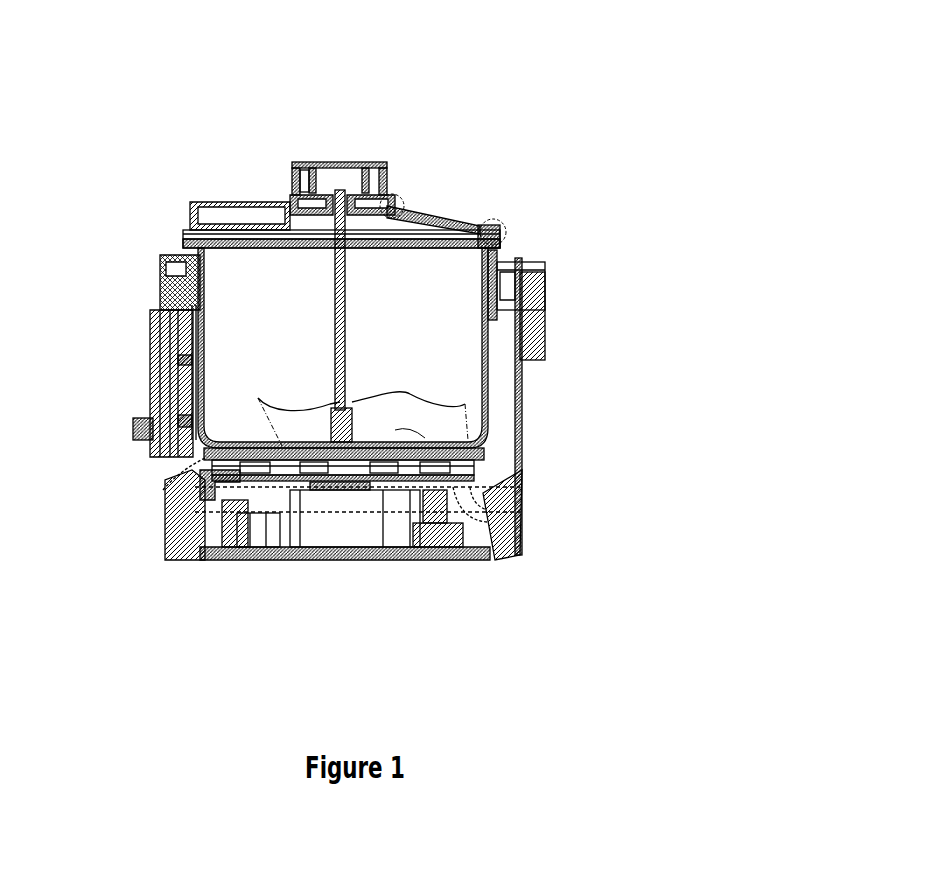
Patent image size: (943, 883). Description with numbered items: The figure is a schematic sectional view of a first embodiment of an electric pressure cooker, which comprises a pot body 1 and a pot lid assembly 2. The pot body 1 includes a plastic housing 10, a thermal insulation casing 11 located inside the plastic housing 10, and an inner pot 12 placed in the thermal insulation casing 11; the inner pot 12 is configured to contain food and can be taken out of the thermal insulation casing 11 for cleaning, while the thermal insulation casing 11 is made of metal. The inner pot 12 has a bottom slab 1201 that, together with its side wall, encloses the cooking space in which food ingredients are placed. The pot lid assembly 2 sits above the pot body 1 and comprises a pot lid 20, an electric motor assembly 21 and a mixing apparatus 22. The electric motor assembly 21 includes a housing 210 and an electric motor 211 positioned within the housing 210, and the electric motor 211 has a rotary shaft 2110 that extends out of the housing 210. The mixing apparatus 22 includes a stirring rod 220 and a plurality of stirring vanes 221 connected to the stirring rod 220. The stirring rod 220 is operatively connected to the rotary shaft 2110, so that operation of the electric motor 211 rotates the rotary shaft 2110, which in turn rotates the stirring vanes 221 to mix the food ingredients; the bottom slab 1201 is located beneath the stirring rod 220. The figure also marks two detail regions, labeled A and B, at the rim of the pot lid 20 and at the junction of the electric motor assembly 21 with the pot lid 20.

The pot body 1 is at (176, 440).
The plastic housing 10 is at (520, 417).
The thermal insulation casing 11 is at (215, 484).
The inner pot 12 is at (148, 393).
The bottom slab 1201 is at (232, 547).
The pot lid assembly 2 is at (334, 223).
The pot lid 20 is at (409, 319).
The electric motor assembly 21 is at (376, 223).
The housing 210 is at (330, 157).
The electric motor 211 is at (362, 160).
The rotary shaft 2110 is at (302, 172).
The mixing apparatus 22 is at (396, 594).
The stirring rod 220 is at (366, 548).
The stirring vanes 221 is at (467, 548).
The rim detail region A is at (512, 238).
The knob junction detail region B is at (398, 190).